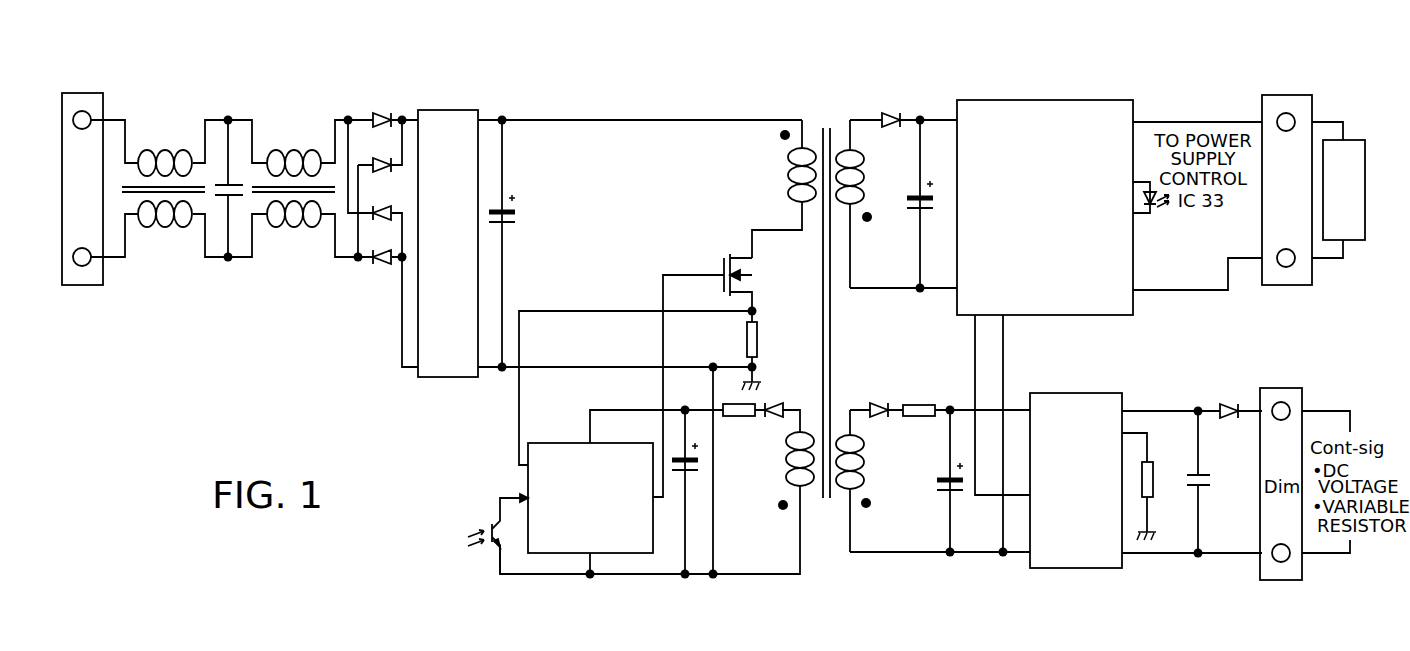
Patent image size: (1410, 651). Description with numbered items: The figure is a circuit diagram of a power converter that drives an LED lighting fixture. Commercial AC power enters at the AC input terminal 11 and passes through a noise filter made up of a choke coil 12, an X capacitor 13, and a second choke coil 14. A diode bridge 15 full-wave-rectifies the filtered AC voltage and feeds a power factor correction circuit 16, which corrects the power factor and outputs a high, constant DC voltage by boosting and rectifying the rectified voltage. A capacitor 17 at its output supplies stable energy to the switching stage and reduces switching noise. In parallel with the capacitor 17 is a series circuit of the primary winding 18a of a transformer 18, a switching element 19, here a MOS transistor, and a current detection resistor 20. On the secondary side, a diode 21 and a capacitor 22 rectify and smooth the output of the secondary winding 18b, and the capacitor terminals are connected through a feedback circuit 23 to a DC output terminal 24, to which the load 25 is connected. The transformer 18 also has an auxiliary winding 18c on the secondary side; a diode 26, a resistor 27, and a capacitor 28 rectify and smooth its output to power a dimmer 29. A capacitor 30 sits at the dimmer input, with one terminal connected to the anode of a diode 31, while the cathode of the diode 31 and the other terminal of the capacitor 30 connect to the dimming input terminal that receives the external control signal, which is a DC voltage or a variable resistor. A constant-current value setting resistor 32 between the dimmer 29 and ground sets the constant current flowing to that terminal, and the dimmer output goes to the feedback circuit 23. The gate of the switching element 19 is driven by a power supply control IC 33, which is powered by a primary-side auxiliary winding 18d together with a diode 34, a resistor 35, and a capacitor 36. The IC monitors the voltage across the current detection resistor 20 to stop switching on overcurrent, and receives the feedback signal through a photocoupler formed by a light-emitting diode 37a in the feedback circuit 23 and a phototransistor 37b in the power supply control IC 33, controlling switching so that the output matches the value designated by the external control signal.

The AC input terminal 11 is at (88, 93).
The choke coil 12 is at (165, 150).
The X capacitor 13 is at (233, 180).
The choke coil 14 is at (296, 150).
The diode bridge 15 is at (378, 92).
The power factor correction circuit 16 is at (448, 110).
The capacitor 17 is at (520, 217).
The transformer 18 is at (827, 128).
The primary winding 18a is at (787, 172).
The secondary winding 18b is at (862, 150).
The auxiliary winding 18c is at (865, 462).
The auxiliary winding 18d is at (778, 467).
The switching element 19 is at (732, 253).
The current detection resistor 20 is at (745, 337).
The diode 21 is at (897, 113).
The capacitor 22 is at (935, 200).
The feedback circuit 23 is at (1047, 100).
The DC output terminal 24 is at (1282, 95).
The load 25 is at (1357, 140).
The diode 26 is at (882, 402).
The resistor 27 is at (917, 404).
The capacitor 28 is at (940, 475).
The dimmer 29 is at (1100, 393).
The capacitor 30 is at (1212, 485).
The diode 31 is at (1232, 402).
The constant-current value setting resistor 32 is at (1155, 488).
The power supply control IC 33 is at (553, 443).
The diode 34 is at (772, 402).
The resistor 35 is at (738, 418).
The capacitor 36 is at (677, 457).
The light-emitting diode 37a is at (1153, 213).
The phototransistor 37b is at (492, 524).